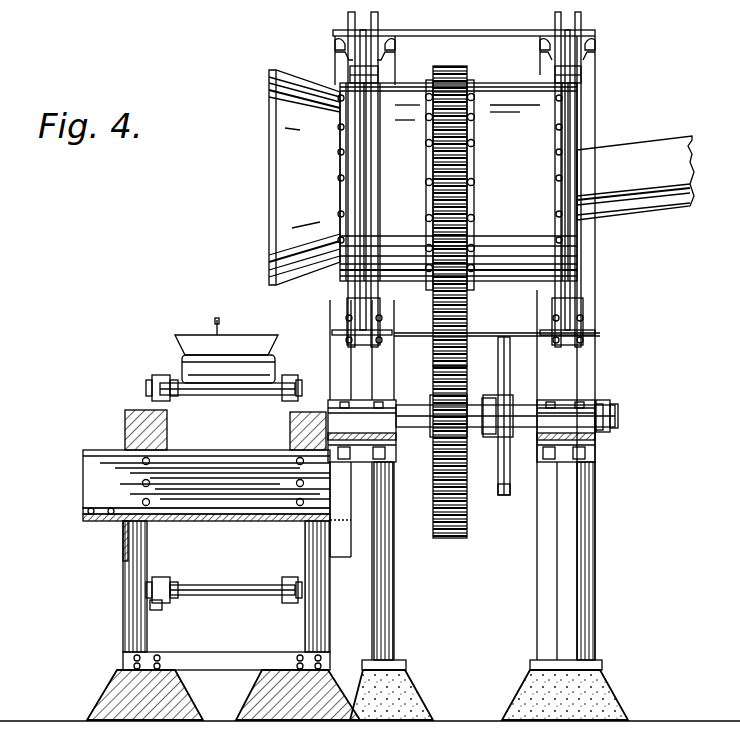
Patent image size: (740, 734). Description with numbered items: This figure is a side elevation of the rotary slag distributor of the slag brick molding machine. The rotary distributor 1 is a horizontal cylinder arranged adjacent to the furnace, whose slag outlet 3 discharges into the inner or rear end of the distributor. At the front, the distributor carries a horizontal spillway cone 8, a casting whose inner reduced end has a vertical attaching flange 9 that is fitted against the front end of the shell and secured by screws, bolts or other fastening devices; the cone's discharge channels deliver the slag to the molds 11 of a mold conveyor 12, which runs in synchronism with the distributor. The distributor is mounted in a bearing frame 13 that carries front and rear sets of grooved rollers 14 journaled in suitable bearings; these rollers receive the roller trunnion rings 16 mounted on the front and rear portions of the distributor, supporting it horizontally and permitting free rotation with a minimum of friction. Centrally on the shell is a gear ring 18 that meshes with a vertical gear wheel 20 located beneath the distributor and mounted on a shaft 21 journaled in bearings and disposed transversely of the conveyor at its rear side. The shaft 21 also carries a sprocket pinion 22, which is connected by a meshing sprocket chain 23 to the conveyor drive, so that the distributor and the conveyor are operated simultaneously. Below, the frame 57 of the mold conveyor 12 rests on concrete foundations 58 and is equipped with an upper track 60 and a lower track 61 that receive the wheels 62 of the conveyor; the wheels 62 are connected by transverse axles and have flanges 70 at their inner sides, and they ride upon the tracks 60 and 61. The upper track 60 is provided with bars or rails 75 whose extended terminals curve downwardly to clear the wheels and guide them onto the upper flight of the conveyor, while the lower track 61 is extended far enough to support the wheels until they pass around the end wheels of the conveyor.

The rotary distributor 1 is at (560, 107).
The slag outlet 3 is at (660, 146).
The spillway cone 8 is at (272, 236).
The attaching flange 9 is at (340, 90).
The molds 11 is at (194, 342).
The mold conveyor 12 is at (226, 400).
The bearing frame 13 is at (484, 30).
The grooved rollers 14 is at (364, 36).
The roller trunnion rings 16 is at (362, 84).
The gear ring 18 is at (462, 147).
The gear wheel 20 is at (462, 538).
The shaft 21 is at (496, 428).
The sprocket pinion 22 is at (504, 454).
The sprocket chain 23 is at (510, 494).
The frame 57 is at (132, 586).
The concrete foundations 58 is at (110, 700).
The upper track 60 is at (126, 414).
The lower track 61 is at (180, 590).
The wheels 62 is at (158, 378).
The flanges 70 is at (162, 376).
The bars or rails 75 is at (148, 406).